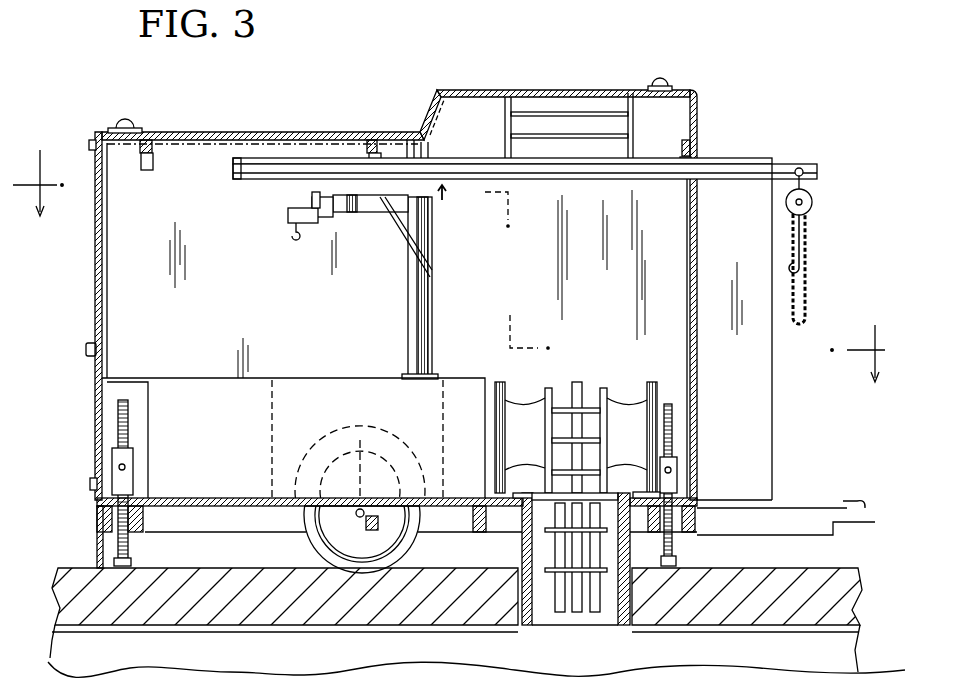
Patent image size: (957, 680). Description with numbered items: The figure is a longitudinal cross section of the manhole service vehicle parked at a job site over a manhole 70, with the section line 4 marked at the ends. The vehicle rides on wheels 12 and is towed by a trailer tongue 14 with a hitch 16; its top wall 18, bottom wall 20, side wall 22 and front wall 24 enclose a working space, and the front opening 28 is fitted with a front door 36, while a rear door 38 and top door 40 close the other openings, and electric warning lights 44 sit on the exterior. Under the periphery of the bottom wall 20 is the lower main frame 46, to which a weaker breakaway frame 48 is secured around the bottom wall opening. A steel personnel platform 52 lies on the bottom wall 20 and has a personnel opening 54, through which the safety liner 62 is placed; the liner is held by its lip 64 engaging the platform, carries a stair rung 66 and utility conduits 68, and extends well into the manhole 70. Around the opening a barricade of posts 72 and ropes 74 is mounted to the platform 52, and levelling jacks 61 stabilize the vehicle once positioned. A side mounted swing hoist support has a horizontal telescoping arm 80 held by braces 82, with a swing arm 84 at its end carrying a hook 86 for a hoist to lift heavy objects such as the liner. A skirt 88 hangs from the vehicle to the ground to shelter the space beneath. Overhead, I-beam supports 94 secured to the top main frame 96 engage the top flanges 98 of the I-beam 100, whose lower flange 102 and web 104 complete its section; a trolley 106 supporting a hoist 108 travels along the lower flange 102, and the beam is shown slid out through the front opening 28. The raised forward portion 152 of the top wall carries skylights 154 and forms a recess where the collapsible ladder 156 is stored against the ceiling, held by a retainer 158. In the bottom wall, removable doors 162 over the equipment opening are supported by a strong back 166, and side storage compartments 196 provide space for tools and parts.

The section line 4- 4 is at (449, 269).
The wheels 12 is at (362, 560).
The trailer tongue 14 is at (780, 528).
The hitch 16 is at (862, 505).
The top wall 18 is at (397, 133).
The bottom wall 20 is at (430, 522).
The side wall 22 is at (463, 278).
The front wall 24 is at (699, 103).
The front opening 28 is at (700, 252).
The front door 36 is at (722, 428).
The rear door 38 is at (96, 268).
The top door 40 is at (301, 131).
The electric warning lights 44 is at (129, 120).
The lower main frame 46 is at (97, 514).
The breakaway frame 48 is at (487, 517).
The personnel platform 52 is at (455, 500).
The personnel opening 54 is at (528, 486).
The levelling jacks 61 is at (113, 455).
The safety liner 62 is at (622, 605).
The lip 64 is at (644, 496).
The stair rung 66 is at (548, 562).
The utility conduits 68 is at (583, 550).
The manhole 70 is at (420, 318).
The posts 72 is at (498, 383).
The ropes 74 is at (529, 490).
The horizontal telescoping arm 80 is at (348, 212).
The braces 82 is at (410, 240).
The swing arm 84 is at (288, 216).
The hook 86 is at (294, 238).
The skirt 88 is at (97, 545).
The I-beam supports 94 is at (150, 170).
The top main frame 96 is at (145, 154).
The top flanges 98 is at (243, 158).
The I-beam 100 is at (443, 196).
The lower flange 102 is at (256, 177).
The web 104 is at (233, 165).
The trolley 106 is at (811, 178).
The hoist 108 is at (811, 204).
The forward portion of the top wall 152 is at (473, 89).
The skylights 154 is at (432, 112).
The collapsible ladder 156 is at (588, 148).
The retainer 158 is at (503, 113).
The removable doors 162 is at (237, 499).
The strong back 166 is at (233, 523).
The side storage compartments 196 is at (183, 378).